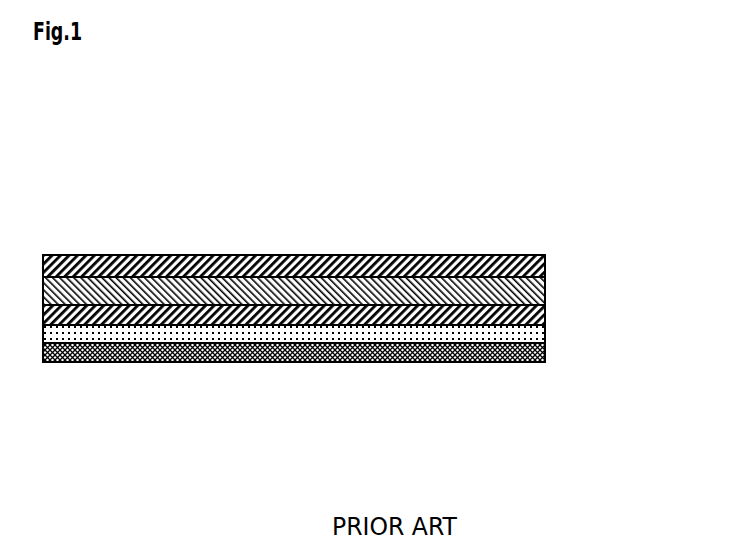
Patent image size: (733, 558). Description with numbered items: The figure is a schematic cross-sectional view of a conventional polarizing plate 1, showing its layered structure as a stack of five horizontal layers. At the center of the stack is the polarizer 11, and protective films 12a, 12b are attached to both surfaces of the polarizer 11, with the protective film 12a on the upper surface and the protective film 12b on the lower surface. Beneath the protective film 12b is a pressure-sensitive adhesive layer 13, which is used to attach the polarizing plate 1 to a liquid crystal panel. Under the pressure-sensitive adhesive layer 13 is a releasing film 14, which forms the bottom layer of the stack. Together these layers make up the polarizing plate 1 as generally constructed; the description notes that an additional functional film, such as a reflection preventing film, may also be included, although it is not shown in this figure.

The polarizing plate 1 is at (374, 190).
The polarizer 11 is at (533, 291).
The protective film 12a is at (526, 267).
The protective film 12b is at (529, 313).
The pressure-sensitive adhesive layer 13 is at (528, 330).
The releasing film 14 is at (488, 349).